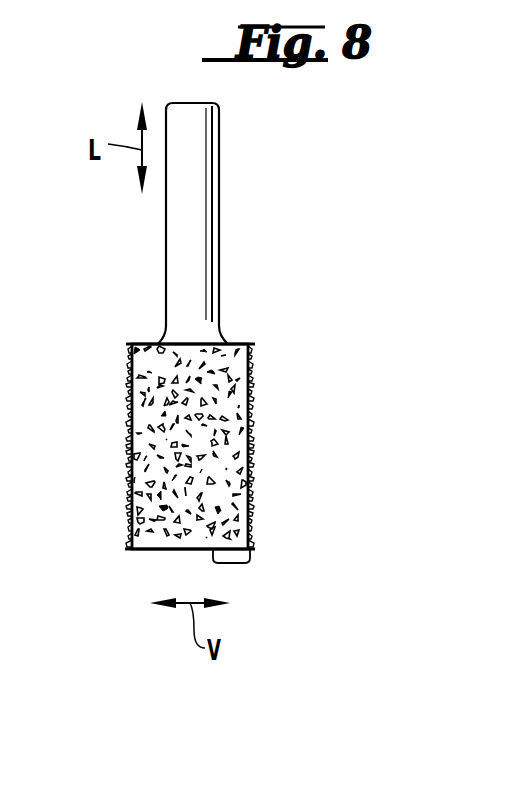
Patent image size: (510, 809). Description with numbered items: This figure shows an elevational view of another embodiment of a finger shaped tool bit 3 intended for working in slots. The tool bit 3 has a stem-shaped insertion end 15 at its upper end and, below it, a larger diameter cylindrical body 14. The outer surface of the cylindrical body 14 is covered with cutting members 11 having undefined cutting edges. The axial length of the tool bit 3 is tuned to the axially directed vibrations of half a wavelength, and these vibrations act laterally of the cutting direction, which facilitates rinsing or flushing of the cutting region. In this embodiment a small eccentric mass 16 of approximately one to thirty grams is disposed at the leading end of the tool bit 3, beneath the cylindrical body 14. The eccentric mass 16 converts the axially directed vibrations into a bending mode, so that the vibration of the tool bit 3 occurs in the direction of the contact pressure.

The finger shaped tool bit 3 is at (237, 312).
The cutting members 11 is at (252, 385).
The cylindrical body 14 is at (155, 533).
The stem-shaped insertion end 15 is at (182, 240).
The eccentric mass 16 is at (222, 557).